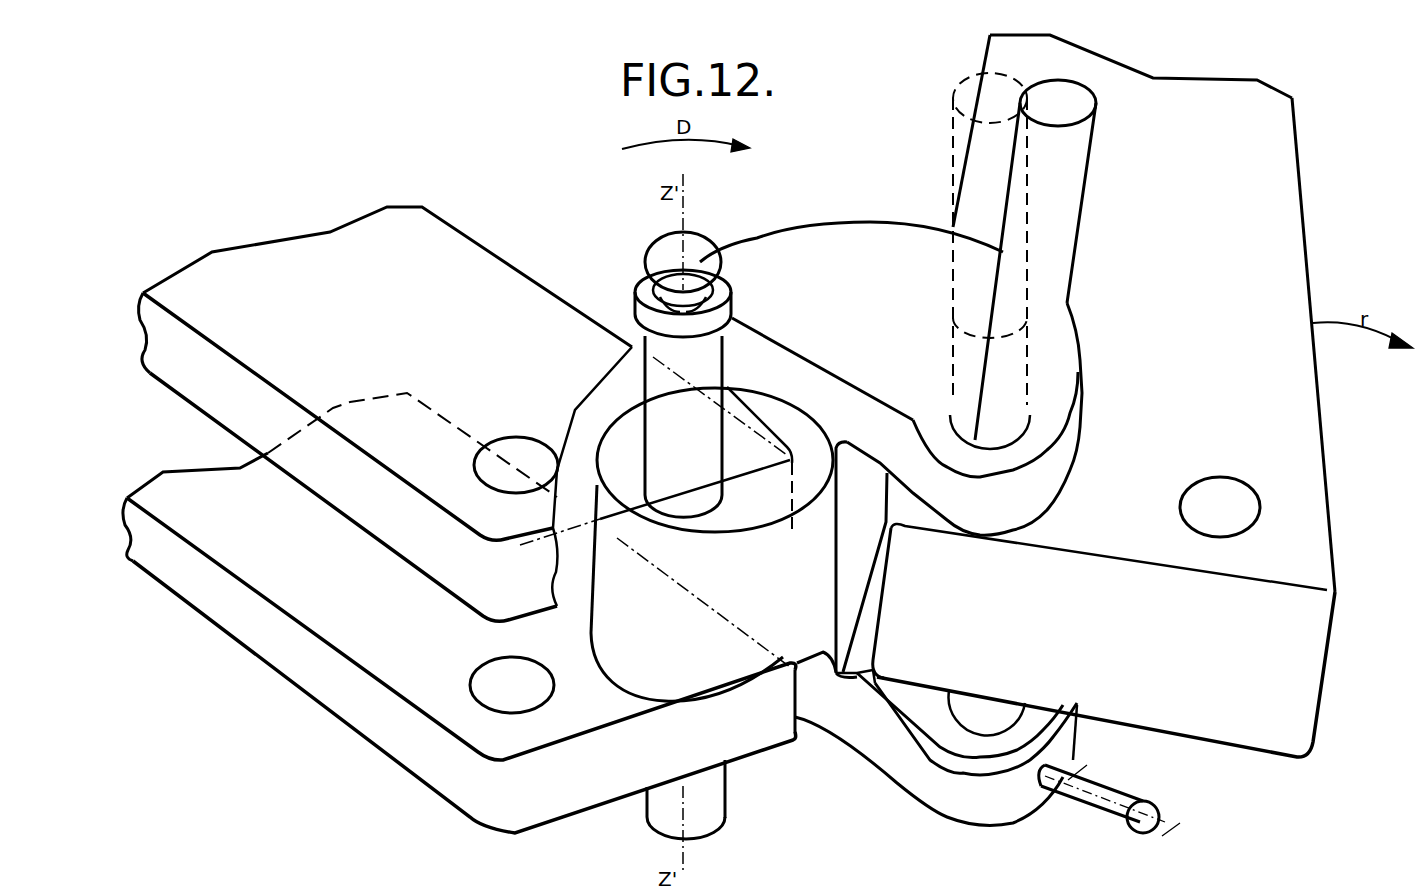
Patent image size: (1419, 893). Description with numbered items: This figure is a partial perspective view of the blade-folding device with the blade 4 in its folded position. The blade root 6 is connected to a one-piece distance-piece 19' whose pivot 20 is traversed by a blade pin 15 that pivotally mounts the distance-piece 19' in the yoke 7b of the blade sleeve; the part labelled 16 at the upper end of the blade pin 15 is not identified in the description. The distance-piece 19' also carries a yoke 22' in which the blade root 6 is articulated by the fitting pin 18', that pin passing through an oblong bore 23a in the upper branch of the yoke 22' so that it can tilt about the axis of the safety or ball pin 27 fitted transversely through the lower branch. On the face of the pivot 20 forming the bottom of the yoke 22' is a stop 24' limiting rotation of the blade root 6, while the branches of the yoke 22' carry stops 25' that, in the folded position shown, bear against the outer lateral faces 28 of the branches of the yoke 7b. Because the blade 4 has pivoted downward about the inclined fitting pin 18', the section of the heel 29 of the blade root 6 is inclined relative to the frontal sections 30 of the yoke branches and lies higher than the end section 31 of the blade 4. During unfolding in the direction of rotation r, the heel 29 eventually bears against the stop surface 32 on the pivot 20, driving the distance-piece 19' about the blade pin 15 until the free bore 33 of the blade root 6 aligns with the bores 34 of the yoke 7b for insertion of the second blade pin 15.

The blade 4 is at (1304, 193).
The blade root 6 is at (1268, 312).
The yoke 7b is at (377, 510).
The blade pin 15 is at (667, 360).
The pin head 16 is at (647, 253).
The fitting pin 18' is at (985, 256).
The distance-piece 19' is at (891, 344).
The pivot 20 is at (620, 473).
The yoke 22' is at (1154, 423).
The oblong bore 23a is at (952, 417).
The stop 24' is at (808, 427).
The stops 25' is at (936, 738).
The safety pin or ball pin 27 is at (1077, 790).
The outer lateral face 28 is at (448, 420).
The heel 29 is at (1265, 682).
The frontal sections 30 is at (530, 578).
The end section 31 is at (1200, 80).
The stop surface 32 is at (682, 625).
The bores 33 is at (1225, 503).
The bores 34 is at (485, 480).